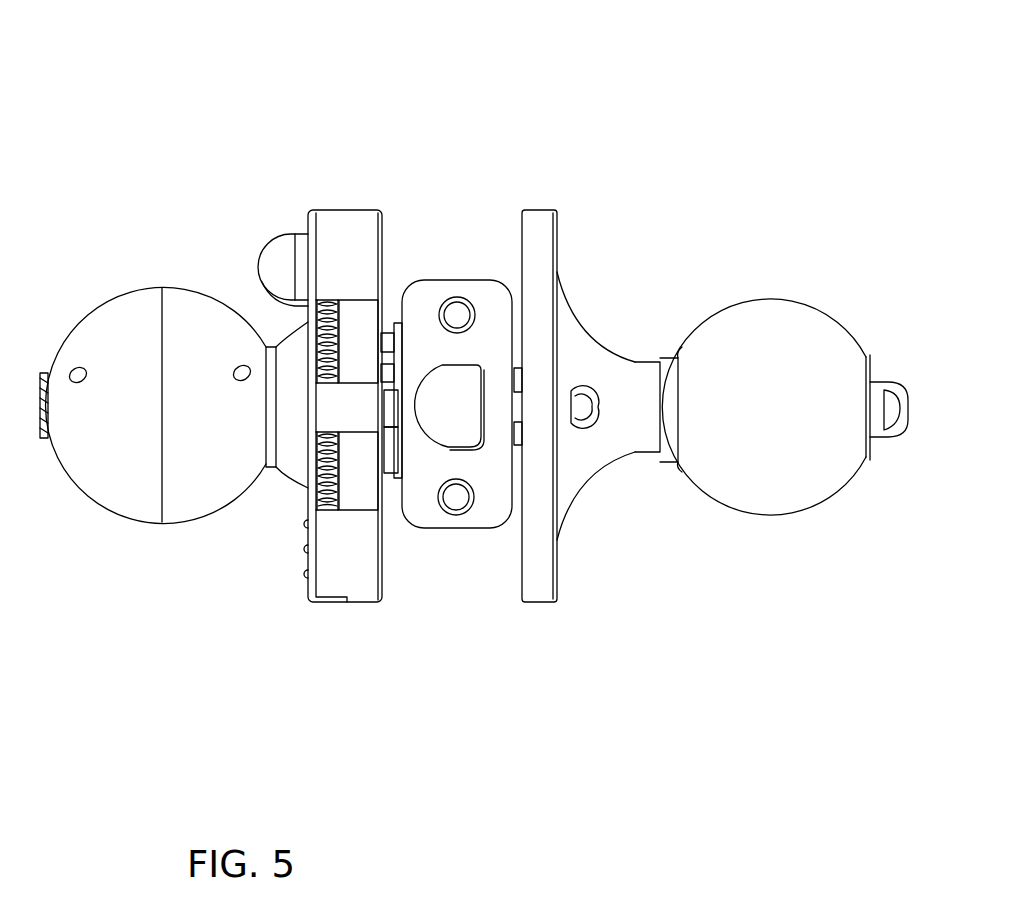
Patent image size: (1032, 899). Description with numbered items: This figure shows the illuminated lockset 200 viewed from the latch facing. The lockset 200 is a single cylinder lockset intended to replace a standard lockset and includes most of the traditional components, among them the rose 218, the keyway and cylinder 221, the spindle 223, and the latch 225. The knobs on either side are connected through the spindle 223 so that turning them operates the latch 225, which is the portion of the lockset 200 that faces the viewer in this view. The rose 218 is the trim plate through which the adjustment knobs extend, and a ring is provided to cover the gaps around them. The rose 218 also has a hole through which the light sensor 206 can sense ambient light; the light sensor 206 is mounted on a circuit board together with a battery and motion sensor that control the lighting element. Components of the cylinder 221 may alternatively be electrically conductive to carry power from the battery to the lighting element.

The lockset 200 is at (569, 109).
The light sensor 206 is at (282, 237).
The rose 218 is at (363, 582).
The keyway and cylinder 221 is at (360, 478).
The spindle 223 is at (482, 507).
The latch 225 is at (445, 393).